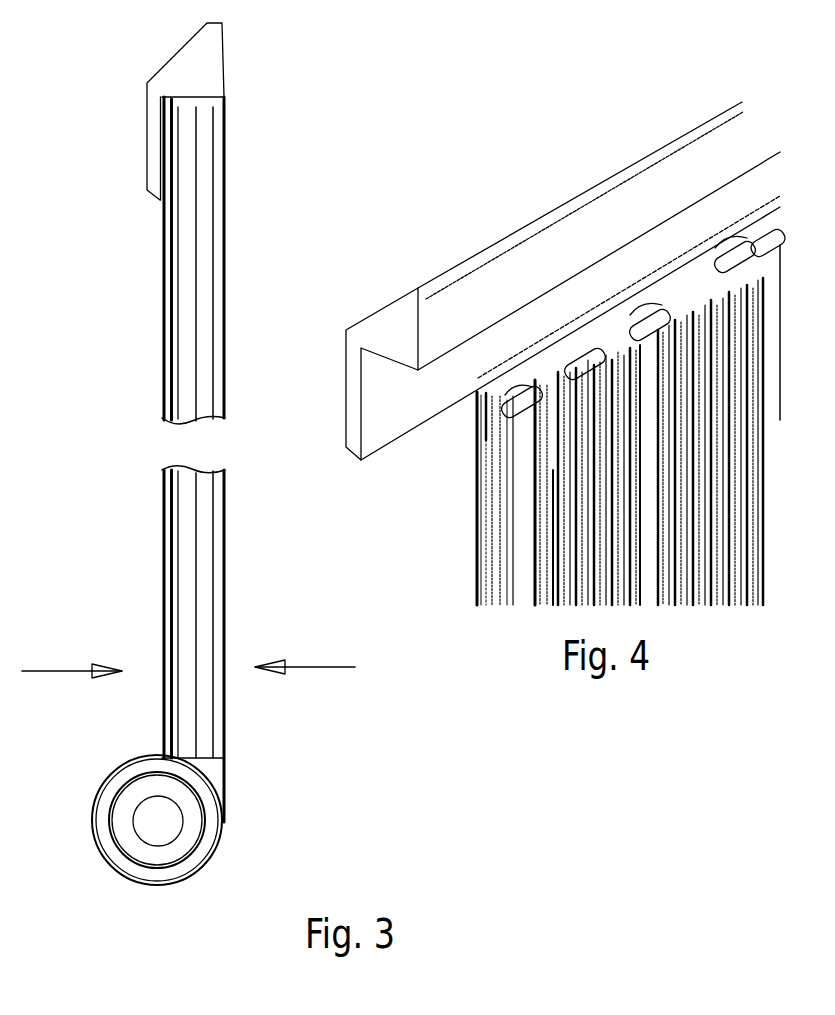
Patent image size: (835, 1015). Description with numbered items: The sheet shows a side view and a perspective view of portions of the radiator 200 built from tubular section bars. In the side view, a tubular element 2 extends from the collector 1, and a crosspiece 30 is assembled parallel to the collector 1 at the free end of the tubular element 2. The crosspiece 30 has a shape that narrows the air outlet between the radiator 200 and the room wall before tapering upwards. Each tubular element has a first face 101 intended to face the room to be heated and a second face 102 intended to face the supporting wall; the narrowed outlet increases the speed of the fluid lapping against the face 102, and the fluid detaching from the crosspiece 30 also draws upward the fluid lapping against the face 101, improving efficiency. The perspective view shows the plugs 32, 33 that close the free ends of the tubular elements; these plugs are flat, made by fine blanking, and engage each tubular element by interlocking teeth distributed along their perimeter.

In FIG. 3, the collector 1 is at (128, 808).
In FIG. 3, the tubular element 2 is at (236, 459).
In FIG. 3, the crosspiece 30 is at (148, 101).
In FIG. 4, the crosspiece 30 is at (535, 214).
In FIG. 4, the plug 32 is at (523, 400).
In FIG. 4, the plug 33 is at (670, 279).
In FIG. 3, the first face 101 is at (305, 641).
In FIG. 3, the second face 102 is at (72, 643).
In FIG. 4, the radiator 200 is at (411, 118).